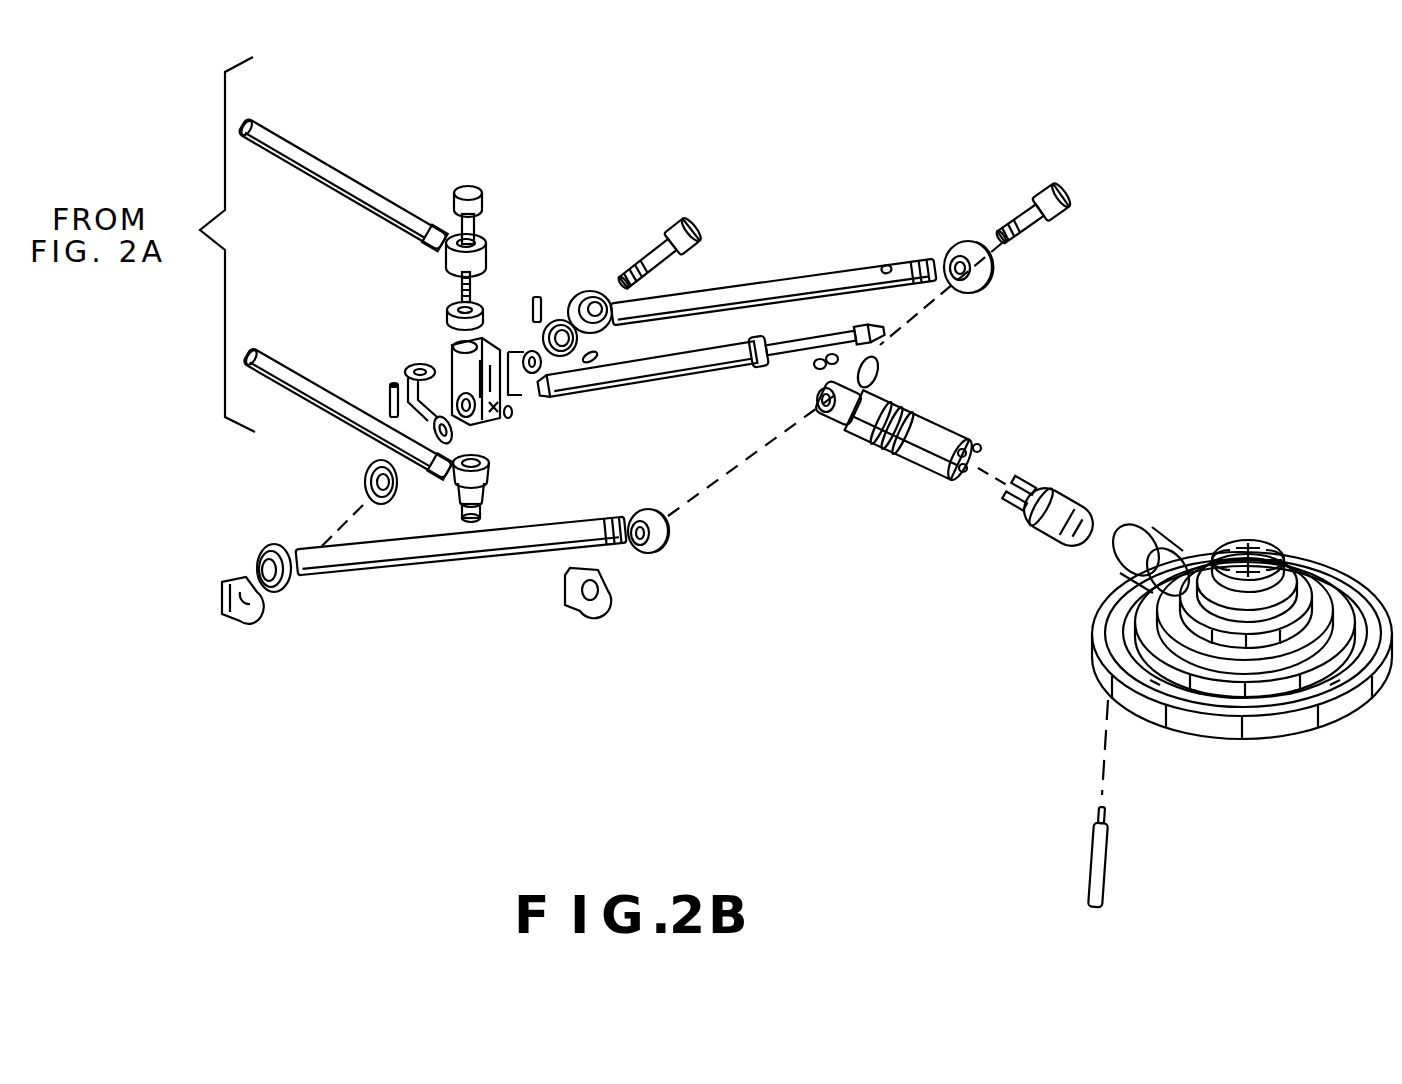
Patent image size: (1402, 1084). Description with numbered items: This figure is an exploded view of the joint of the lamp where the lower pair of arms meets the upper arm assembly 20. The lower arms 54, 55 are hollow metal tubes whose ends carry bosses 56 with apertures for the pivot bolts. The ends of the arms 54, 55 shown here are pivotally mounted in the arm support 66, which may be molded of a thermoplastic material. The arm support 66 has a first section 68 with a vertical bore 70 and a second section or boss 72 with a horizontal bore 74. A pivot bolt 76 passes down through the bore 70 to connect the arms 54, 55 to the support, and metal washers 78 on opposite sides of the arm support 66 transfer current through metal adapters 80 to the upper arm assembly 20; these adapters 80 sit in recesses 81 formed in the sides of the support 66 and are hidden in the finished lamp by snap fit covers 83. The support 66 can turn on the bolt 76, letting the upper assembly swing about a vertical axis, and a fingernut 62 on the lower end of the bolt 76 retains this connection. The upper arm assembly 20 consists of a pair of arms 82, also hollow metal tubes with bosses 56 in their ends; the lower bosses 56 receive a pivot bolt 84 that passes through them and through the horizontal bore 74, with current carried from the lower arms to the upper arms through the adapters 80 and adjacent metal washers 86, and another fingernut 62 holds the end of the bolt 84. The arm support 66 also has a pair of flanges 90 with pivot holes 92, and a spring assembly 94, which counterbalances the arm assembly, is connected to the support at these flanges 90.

The upper arm assembly 20 is at (645, 420).
The arm 54 is at (362, 177).
The arm 55 is at (293, 374).
The boss 56 is at (490, 250).
The fingernut 62 is at (470, 522).
The arm support 66 is at (500, 420).
The first section 68 is at (458, 338).
The vertical bore 70 is at (456, 352).
The second section or boss 72 is at (512, 410).
The horizontal bore 74 is at (485, 428).
The pivot bolt 76 is at (454, 243).
The metal washer 78 is at (448, 258).
The metal adapter 80 is at (417, 367).
The recess 81 is at (456, 365).
The arm 82 is at (853, 277).
The snap fit cover 83 is at (391, 392).
The pivot bolt 84 is at (688, 228).
The metal washer 86 is at (562, 320).
The flange 90 is at (508, 352).
The pivot hole 92 is at (825, 340).
The spring assembly 94 is at (711, 372).